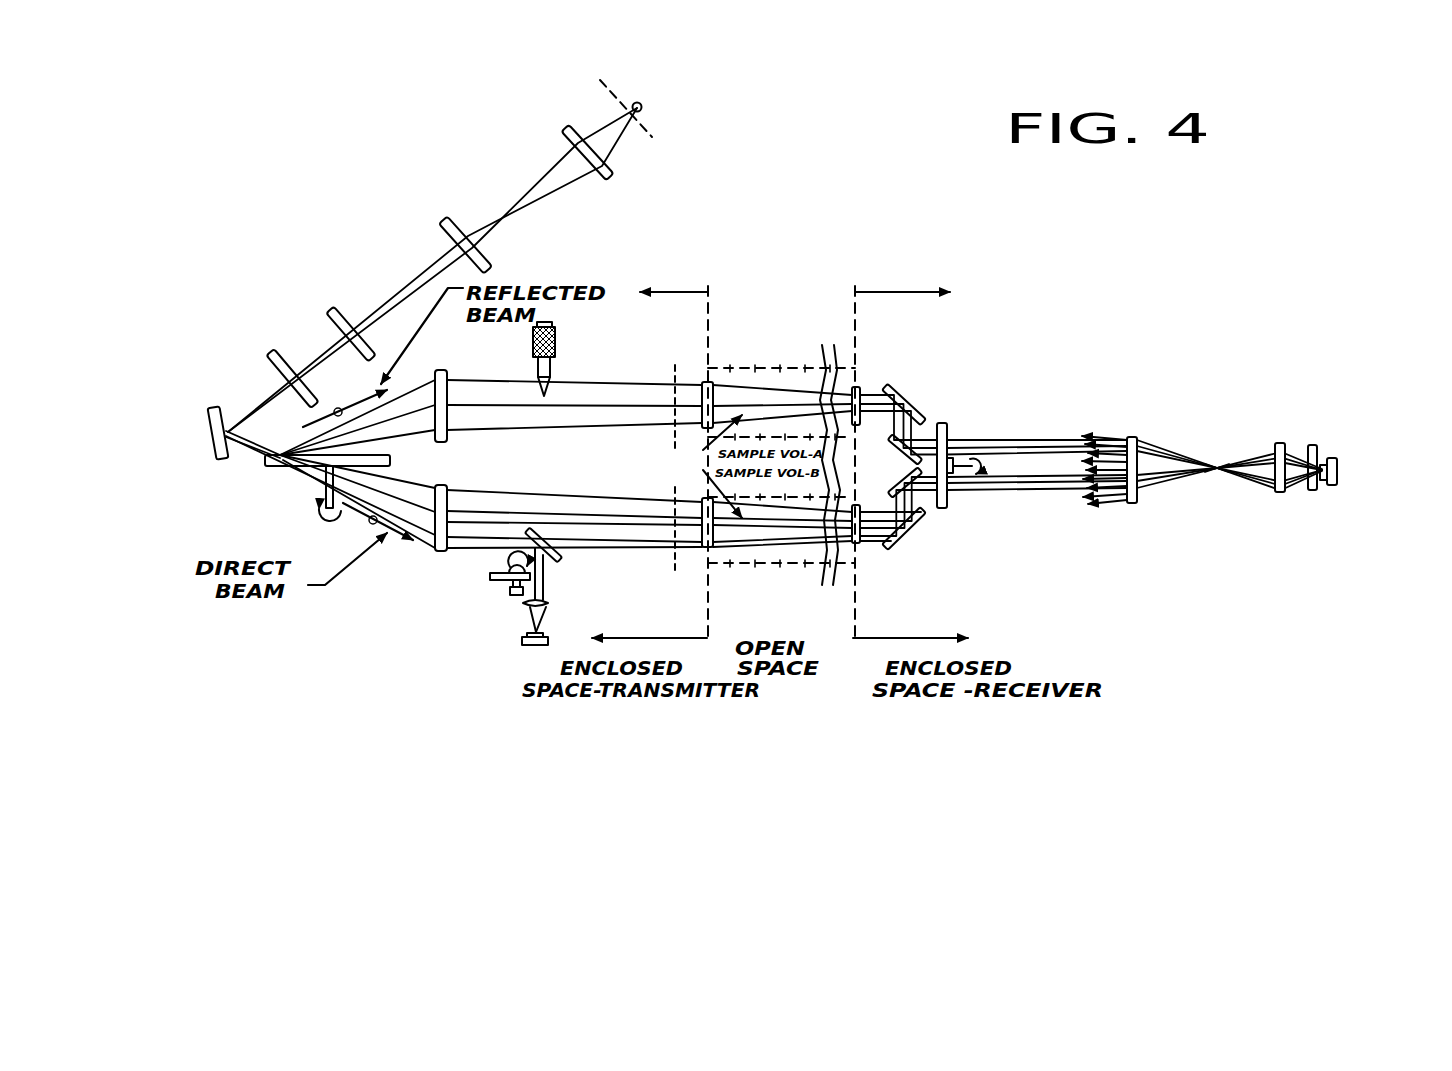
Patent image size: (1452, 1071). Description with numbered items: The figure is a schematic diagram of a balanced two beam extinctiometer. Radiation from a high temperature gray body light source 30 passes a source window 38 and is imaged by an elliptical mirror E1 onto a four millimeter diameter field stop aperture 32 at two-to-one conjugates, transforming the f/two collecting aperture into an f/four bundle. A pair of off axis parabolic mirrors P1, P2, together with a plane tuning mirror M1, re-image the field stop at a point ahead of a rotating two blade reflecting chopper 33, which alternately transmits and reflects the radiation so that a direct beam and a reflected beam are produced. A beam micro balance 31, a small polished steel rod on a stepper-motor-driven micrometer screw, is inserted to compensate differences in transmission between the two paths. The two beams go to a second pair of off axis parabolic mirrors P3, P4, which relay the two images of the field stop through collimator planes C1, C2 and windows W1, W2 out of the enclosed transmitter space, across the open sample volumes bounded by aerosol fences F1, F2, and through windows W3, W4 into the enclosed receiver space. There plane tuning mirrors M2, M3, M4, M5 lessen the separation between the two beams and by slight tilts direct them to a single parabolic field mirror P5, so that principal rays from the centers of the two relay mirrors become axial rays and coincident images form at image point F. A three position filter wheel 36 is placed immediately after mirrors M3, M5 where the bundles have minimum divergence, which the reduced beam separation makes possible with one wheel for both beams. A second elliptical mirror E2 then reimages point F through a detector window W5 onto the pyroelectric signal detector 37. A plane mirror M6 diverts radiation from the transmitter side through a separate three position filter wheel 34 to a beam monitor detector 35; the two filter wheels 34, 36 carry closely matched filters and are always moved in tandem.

The light source 30 is at (802, 95).
The source window 38 is at (648, 134).
The elliptical mirror E1 is at (605, 180).
The aperture 32 is at (452, 225).
The off axis parabolic mirror P1 is at (330, 314).
The off axis parabolic mirror P2 is at (272, 356).
The plane tuning mirror M1 is at (210, 418).
The two blade reflecting chopper 33 is at (265, 460).
The beam micro balance 31 is at (556, 340).
The off axis parabolic mirror P3 is at (442, 370).
The off axis parabolic mirror P4 is at (437, 553).
The collimator plane C1 is at (675, 377).
The collimator plane C2 is at (673, 563).
The window W1 is at (702, 428).
The window W2 is at (702, 500).
The window W3 is at (858, 387).
The window W4 is at (858, 543).
The plane tuning mirror M2 is at (905, 392).
The plane tuning mirror M3 is at (900, 451).
The plane tuning mirror M4 is at (895, 540).
The plane tuning mirror M5 is at (905, 477).
The plane mirror M6 is at (552, 560).
The filter wheel 36 is at (947, 507).
The off axis parabolic mirror P5 is at (1132, 437).
The image point F is at (1214, 496).
The elliptical mirror E2 is at (1277, 452).
The detector window W5 is at (1317, 453).
The signal detector 37 is at (1354, 507).
The filter wheel 34 is at (513, 592).
The beam monitor detector 35 is at (527, 653).
The aerosol fence F1 is at (781, 328).
The aerosol fence F2 is at (781, 594).